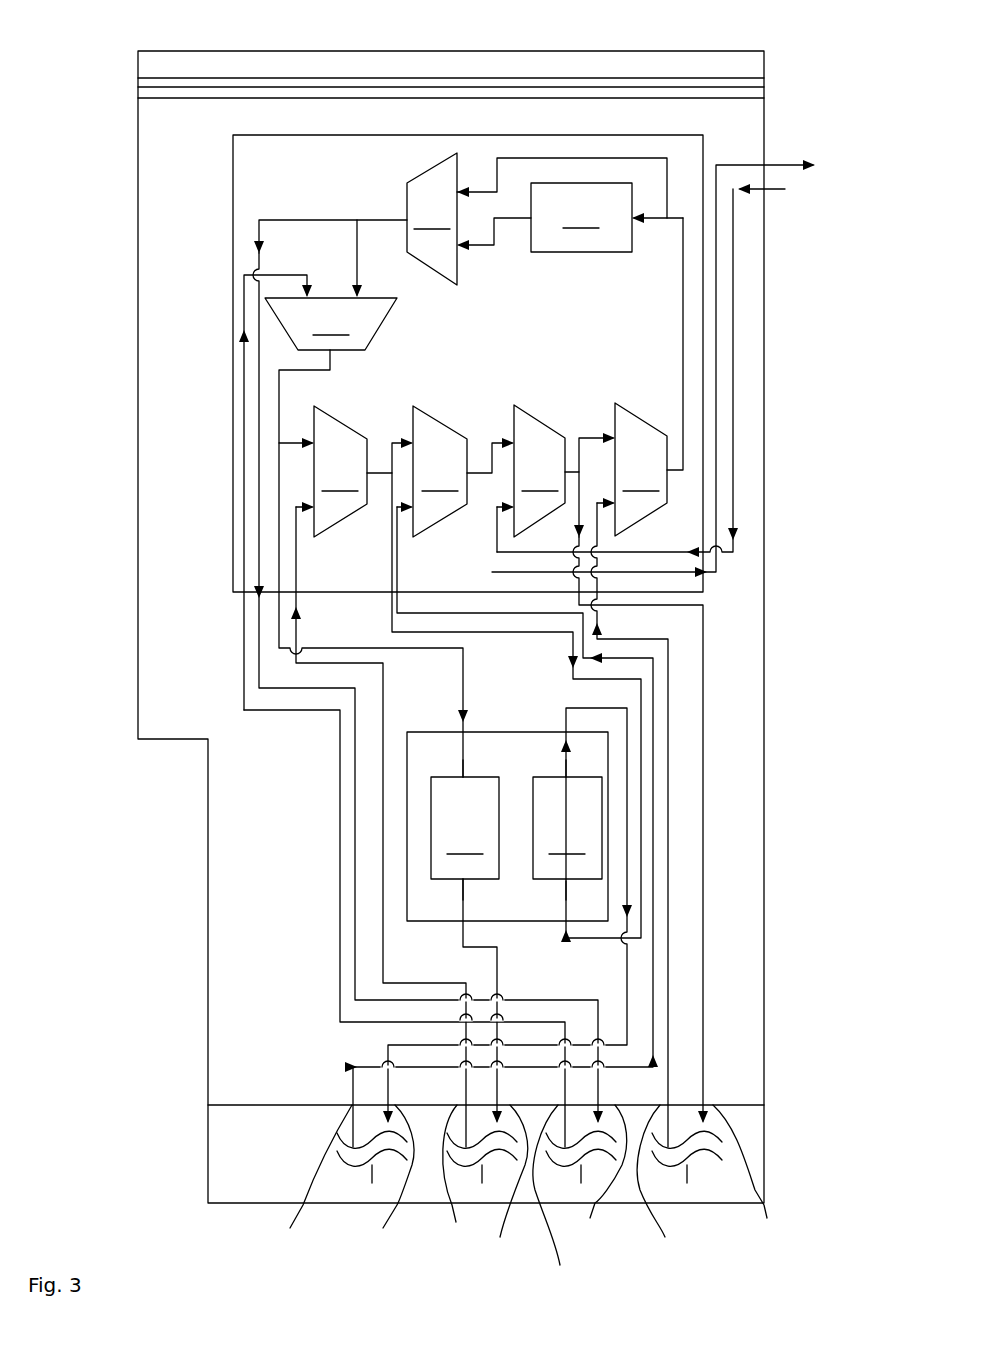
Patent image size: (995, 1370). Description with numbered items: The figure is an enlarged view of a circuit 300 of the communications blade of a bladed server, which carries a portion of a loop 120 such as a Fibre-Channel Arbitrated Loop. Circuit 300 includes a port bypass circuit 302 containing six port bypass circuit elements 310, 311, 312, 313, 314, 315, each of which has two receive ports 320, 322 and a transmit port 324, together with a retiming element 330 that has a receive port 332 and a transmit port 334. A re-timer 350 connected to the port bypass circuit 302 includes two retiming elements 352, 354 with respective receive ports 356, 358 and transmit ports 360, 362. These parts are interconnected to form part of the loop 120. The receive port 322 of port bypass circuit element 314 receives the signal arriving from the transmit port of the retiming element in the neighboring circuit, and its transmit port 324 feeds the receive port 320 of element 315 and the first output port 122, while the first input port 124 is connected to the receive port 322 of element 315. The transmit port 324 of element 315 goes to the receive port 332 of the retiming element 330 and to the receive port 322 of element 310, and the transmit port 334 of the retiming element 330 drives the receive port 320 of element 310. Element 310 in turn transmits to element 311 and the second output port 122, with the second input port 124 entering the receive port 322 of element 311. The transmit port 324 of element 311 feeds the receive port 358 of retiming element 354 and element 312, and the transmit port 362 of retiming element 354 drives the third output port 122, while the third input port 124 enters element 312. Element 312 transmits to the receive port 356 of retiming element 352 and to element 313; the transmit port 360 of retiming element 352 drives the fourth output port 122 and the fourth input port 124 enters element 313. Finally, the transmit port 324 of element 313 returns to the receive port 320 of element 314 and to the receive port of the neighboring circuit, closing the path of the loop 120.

The circuit 300 is at (662, 33).
The port bypass circuit 302 is at (322, 162).
The loop 120 is at (785, 165).
The port bypass circuit element 310 is at (432, 219).
The port bypass circuit element 311 is at (331, 324).
The port bypass circuit element 312 is at (340, 471).
The port bypass circuit element 313 is at (440, 471).
The port bypass circuit element 314 is at (539, 471).
The port bypass circuit element 315 is at (641, 469).
The receive port 320 is at (362, 296).
The receive port 322 is at (460, 187).
The transmit port 324 is at (405, 218).
The retiming element 330 is at (581, 217).
The receive port 332 is at (633, 220).
The transmit port 334 is at (528, 218).
The re-timer 350 is at (595, 748).
The retiming element 352 is at (567, 828).
The retiming element 354 is at (465, 828).
The receive port 356 is at (566, 883).
The receive port 358 is at (463, 772).
The transmit port 360 is at (565, 772).
The transmit port 362 is at (463, 883).
The output port 122 is at (591, 1191).
The input port 124 is at (487, 1199).